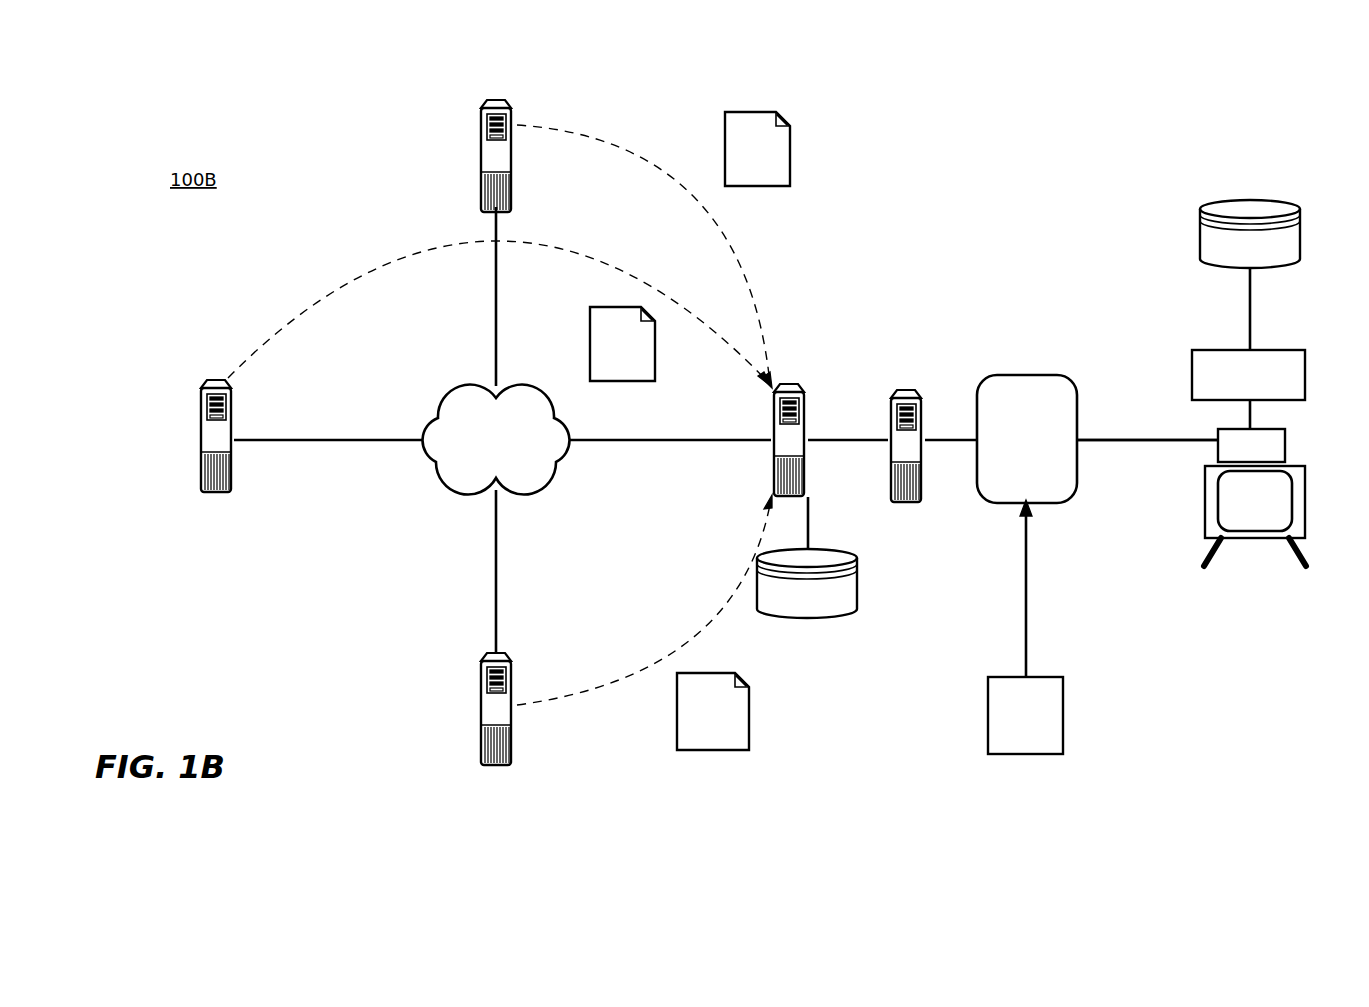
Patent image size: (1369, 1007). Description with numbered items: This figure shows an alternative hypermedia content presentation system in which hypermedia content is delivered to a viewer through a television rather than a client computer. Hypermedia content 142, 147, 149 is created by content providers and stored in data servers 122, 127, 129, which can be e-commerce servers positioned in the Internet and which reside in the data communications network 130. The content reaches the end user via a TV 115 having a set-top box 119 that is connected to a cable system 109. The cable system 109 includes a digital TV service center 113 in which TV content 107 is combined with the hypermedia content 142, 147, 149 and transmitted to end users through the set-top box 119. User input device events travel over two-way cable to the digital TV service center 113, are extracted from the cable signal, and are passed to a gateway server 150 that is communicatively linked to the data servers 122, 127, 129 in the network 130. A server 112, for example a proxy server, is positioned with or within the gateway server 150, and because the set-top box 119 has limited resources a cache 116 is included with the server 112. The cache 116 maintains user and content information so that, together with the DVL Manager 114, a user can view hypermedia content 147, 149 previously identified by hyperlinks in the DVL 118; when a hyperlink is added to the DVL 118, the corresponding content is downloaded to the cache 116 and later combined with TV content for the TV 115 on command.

The data server 129 is at (478, 153).
The data server 127 is at (219, 492).
The data server 122 is at (478, 680).
The server 112 is at (808, 408).
The gateway server 150 is at (903, 392).
The data communications network 130 is at (443, 463).
The hypermedia content 149 is at (790, 148).
The hypermedia content 147 is at (590, 341).
The hypermedia content 142 is at (708, 750).
The cache 116 is at (857, 590).
The digital TV service center 113 is at (1027, 375).
The TV content 107 is at (1063, 735).
The cable system 109 is at (1132, 441).
The DVL 118 is at (1272, 268).
The DVL Manager 114 is at (1305, 373).
The set-top box 119 is at (1285, 444).
The TV 115 is at (1305, 491).